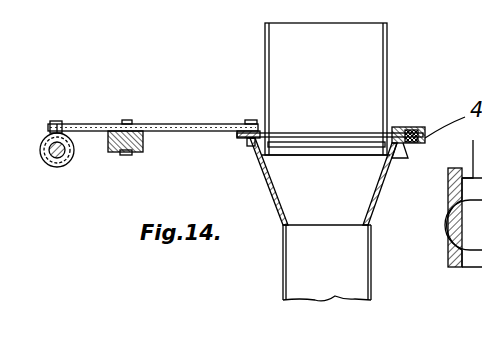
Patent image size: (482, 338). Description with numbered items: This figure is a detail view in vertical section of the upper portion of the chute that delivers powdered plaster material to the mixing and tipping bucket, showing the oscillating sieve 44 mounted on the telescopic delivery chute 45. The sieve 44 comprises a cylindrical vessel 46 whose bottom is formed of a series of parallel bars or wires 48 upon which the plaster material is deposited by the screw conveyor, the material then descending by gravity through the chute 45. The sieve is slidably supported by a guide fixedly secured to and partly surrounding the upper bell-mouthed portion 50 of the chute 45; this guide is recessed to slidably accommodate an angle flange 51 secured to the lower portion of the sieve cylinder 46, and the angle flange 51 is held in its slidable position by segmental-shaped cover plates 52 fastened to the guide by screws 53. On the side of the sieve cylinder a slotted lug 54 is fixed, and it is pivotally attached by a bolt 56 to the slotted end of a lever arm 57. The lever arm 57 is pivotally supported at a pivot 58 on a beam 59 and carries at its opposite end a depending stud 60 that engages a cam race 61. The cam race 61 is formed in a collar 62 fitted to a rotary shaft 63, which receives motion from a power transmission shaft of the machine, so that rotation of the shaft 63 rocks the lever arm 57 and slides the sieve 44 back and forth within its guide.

The oscillating sieve 44 is at (319, 132).
The telescopic delivery chute 45 is at (327, 263).
The cylindrical vessel 46 is at (265, 83).
The parallel bars or wires 48 is at (353, 143).
The bell-mouthed portion 50 is at (258, 166).
The angle flange 51 is at (403, 127).
The segmental-shaped cover plates 52 is at (417, 128).
The screws 53 is at (425, 145).
The lug 54 is at (237, 135).
The bolt 56 is at (253, 120).
The lever arm 57 is at (180, 112).
The pivot 58 is at (132, 113).
The beam 59 is at (137, 152).
The depending stud 60 is at (57, 121).
The cam race 61 is at (68, 162).
The collar 62 is at (48, 133).
The rotary shaft 63 is at (53, 163).